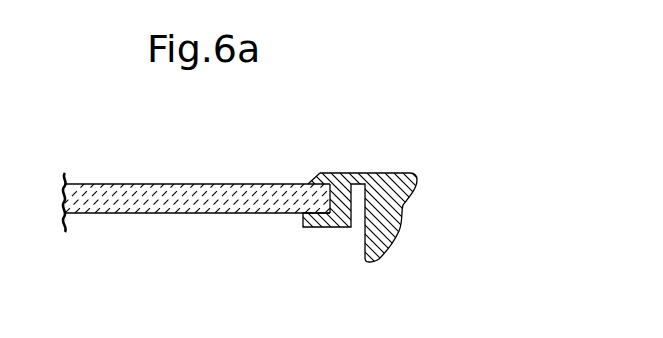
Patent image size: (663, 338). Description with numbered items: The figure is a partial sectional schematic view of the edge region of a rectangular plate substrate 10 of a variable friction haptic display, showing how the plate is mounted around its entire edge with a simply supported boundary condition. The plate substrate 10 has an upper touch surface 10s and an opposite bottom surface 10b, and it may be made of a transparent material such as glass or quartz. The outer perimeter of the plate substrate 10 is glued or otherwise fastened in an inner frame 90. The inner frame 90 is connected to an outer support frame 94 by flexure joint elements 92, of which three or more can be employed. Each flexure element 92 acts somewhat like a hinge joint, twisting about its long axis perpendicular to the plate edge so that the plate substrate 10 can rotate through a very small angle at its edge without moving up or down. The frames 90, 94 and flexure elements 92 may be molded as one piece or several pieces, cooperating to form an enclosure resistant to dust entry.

The plate substrate 10 is at (193, 206).
The touch surface 10s is at (202, 184).
The bottom surface 10b is at (153, 214).
The inner frame 90 is at (366, 170).
The flexure joint element 92 is at (357, 172).
The outer support frame 94 is at (387, 205).